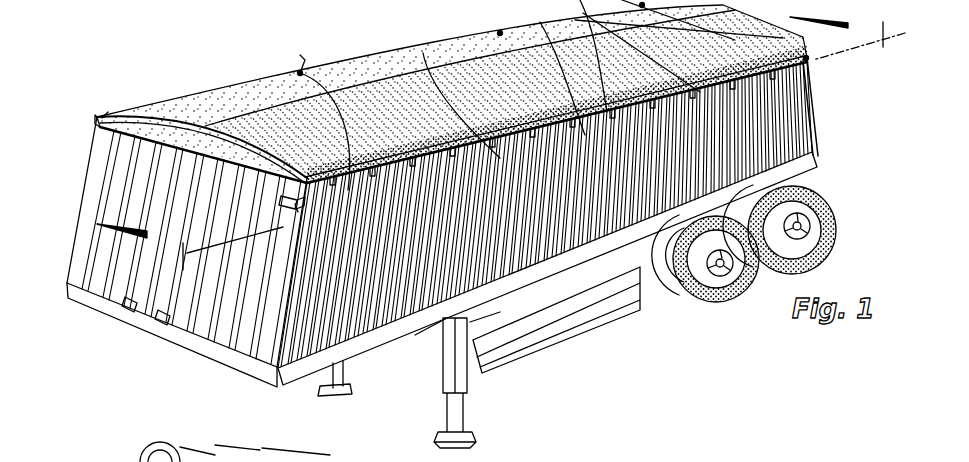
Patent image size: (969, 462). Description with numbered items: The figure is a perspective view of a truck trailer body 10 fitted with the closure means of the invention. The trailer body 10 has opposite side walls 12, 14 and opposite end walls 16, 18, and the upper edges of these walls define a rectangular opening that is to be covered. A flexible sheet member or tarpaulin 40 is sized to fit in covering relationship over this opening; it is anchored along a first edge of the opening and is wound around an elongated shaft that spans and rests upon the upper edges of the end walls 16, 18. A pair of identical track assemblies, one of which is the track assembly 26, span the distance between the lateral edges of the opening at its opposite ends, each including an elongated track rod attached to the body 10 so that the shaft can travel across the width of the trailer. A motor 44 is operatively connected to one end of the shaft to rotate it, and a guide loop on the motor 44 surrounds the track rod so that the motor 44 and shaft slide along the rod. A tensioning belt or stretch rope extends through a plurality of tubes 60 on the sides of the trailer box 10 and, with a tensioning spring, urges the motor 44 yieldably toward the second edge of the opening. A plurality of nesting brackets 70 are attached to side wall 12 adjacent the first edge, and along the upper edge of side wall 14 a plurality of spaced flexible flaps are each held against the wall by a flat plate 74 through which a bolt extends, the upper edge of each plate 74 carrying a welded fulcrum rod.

The truck trailer body 10 is at (262, 66).
The side wall 12 is at (793, 112).
The side wall 14 is at (88, 190).
The end wall 16 is at (100, 166).
The end wall 18 is at (813, 98).
The track assembly 26 is at (150, 108).
The flexible sheet member or tarpaulin 40 is at (213, 100).
The motor 44 is at (298, 215).
The tubes 60 is at (300, 73).
The nesting brackets 70 is at (102, 118).
The flat plate 74 is at (423, 53).